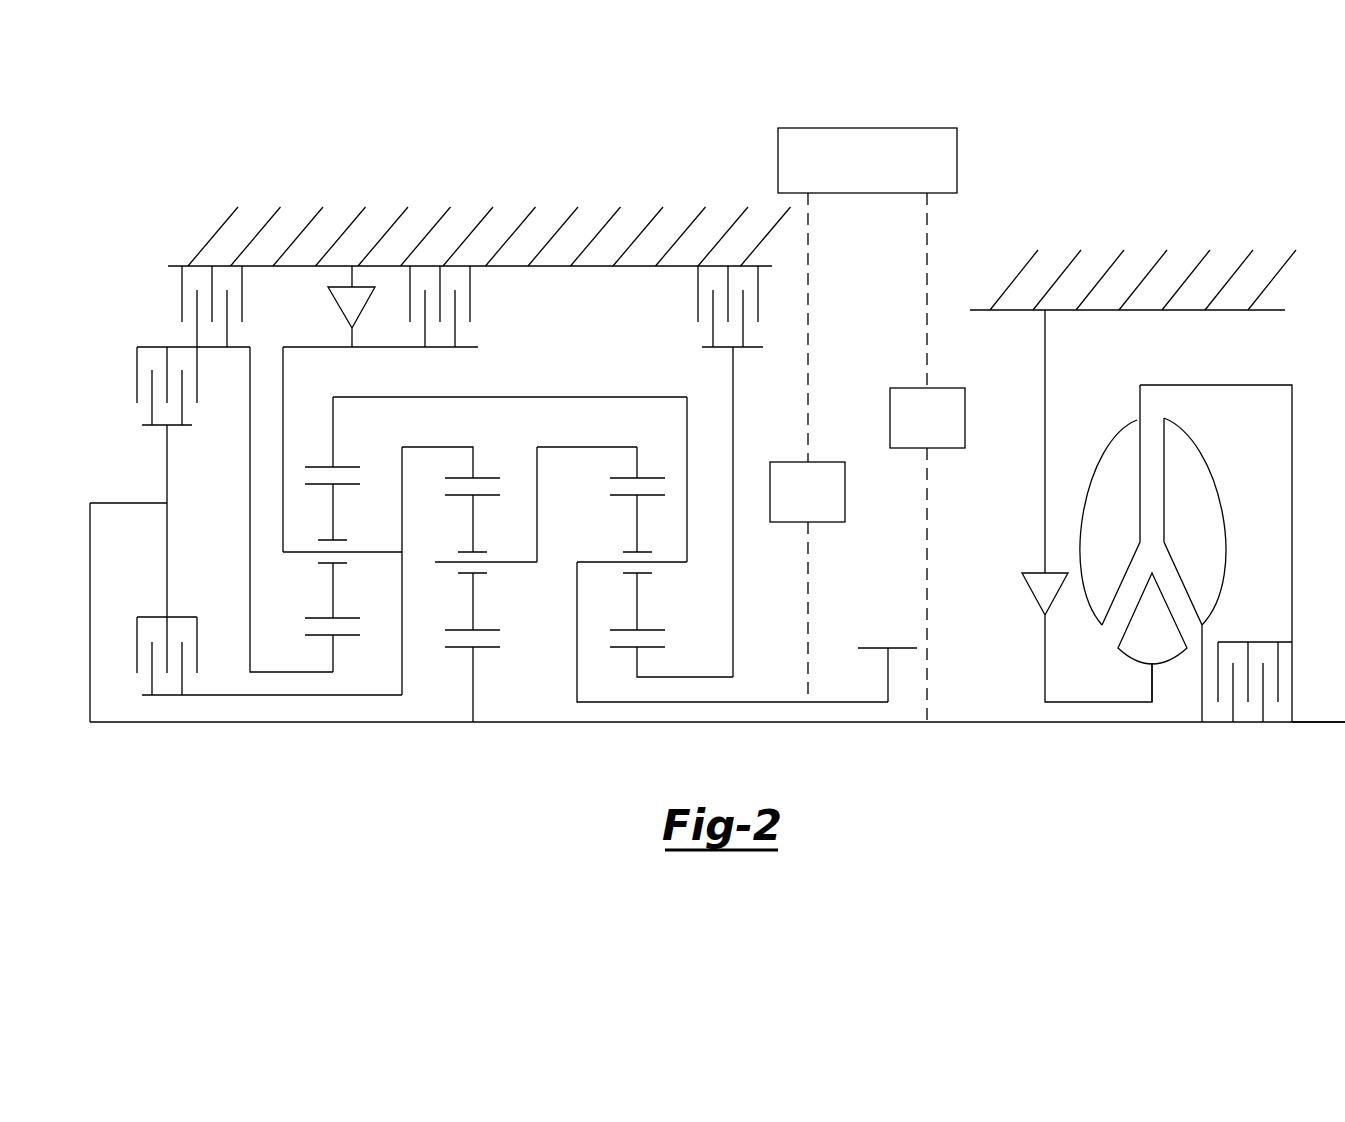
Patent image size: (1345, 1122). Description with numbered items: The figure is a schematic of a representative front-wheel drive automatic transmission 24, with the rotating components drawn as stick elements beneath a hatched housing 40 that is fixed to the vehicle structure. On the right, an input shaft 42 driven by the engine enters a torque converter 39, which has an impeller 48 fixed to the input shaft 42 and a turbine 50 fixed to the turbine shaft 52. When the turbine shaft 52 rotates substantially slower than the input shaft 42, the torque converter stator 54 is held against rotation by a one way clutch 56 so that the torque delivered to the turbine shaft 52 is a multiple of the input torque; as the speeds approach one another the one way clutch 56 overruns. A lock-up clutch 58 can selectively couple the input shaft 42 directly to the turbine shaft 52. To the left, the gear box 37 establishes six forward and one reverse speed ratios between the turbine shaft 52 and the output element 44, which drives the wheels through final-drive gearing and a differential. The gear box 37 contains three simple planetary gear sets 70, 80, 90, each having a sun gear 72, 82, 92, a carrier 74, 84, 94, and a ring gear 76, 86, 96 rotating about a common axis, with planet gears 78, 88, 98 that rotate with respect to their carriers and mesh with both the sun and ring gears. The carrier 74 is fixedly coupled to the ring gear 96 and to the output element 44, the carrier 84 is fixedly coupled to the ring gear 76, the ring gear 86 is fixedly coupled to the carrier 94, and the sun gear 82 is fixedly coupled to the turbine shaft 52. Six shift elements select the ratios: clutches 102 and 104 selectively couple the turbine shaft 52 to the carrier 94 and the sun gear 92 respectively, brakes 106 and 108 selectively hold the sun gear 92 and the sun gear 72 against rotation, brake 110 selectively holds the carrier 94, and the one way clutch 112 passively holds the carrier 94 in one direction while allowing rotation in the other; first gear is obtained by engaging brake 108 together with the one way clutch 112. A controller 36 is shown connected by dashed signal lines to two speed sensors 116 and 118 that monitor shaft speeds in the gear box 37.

The electric machine 24 is at (1166, 158).
The controller 36 is at (957, 160).
The gear box 37 is at (450, 160).
The torque converter 39 is at (1091, 425).
The housing 40 is at (646, 218).
The input shaft 42 is at (1318, 722).
The output element 44 is at (887, 685).
The impeller 48 is at (1098, 528).
The turbine 50 is at (1180, 528).
The turbine shaft 52 is at (890, 722).
The torque converter stator 54 is at (1140, 642).
The one way clutch 56 is at (1030, 592).
The lock-up clutch 58 is at (1238, 641).
The planetary gear set 70 is at (730, 583).
The sun gear 72 is at (640, 663).
The carrier 74 is at (672, 565).
The ring gear 76 is at (637, 468).
The planet gears 78 is at (637, 607).
The planetary gear set 80 is at (519, 589).
The sun gear 82 is at (473, 686).
The carrier 84 is at (510, 565).
The ring gear 86 is at (473, 462).
The planet gears 88 is at (473, 607).
The planetary gear set 90 is at (448, 558).
The sun gear 92 is at (333, 663).
The carrier 94 is at (283, 472).
The ring gear 96 is at (333, 428).
The planet gears 98 is at (333, 590).
The clutch 102 is at (197, 644).
The clutch 104 is at (197, 367).
The brake 106 is at (182, 305).
The brake 108 is at (698, 303).
The brake 110 is at (470, 303).
The one way clutch 112 is at (340, 305).
The speed sensor 116 is at (952, 450).
The speed sensor 118 is at (832, 525).